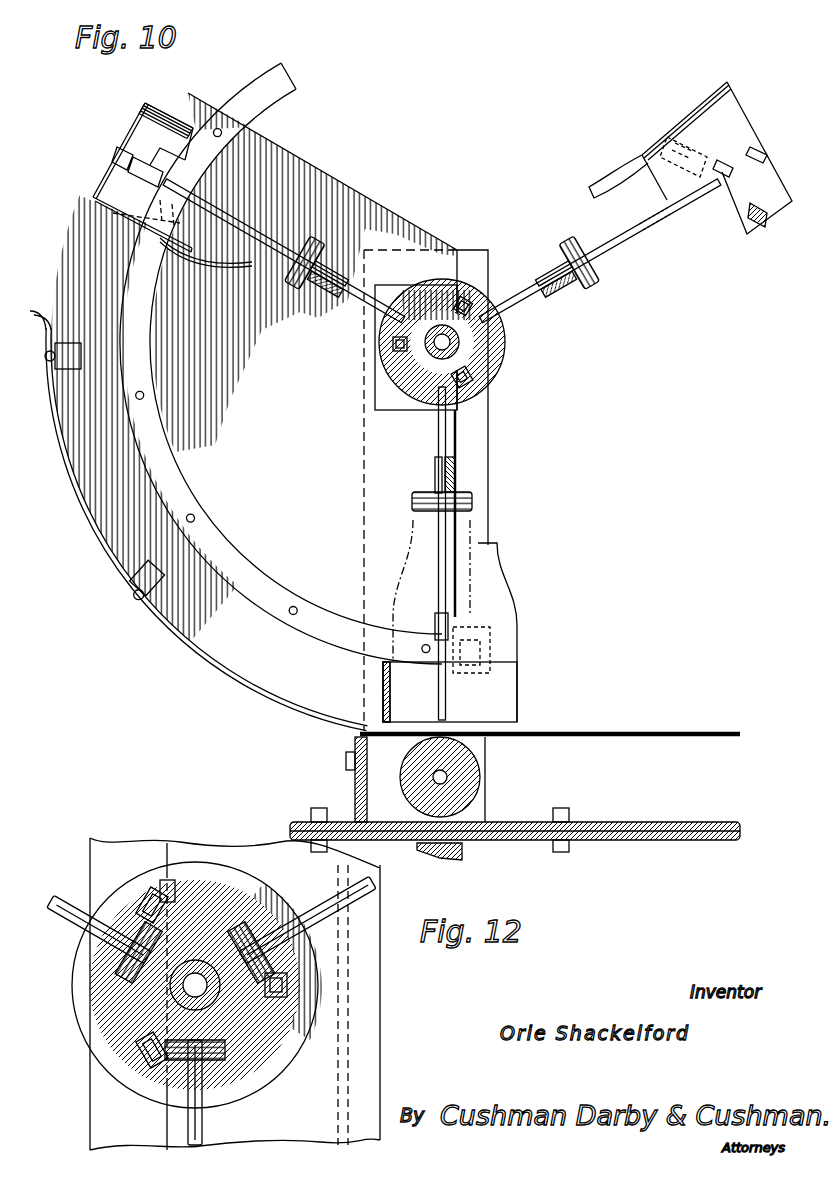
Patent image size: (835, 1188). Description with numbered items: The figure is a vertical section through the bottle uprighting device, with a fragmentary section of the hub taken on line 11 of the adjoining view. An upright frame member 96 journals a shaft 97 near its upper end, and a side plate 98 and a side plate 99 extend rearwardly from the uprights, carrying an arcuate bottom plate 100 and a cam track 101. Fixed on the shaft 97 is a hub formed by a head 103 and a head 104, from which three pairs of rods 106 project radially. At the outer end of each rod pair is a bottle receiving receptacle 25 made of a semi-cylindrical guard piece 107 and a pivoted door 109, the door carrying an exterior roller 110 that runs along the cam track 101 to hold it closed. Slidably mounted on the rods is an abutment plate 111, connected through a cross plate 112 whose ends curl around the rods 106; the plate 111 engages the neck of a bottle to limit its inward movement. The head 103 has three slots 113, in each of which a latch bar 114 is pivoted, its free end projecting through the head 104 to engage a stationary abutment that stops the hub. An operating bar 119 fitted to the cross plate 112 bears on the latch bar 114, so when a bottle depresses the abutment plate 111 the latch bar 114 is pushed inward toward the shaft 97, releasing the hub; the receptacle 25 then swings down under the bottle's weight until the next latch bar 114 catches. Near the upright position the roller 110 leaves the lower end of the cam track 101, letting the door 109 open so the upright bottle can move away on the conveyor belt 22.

In FIG. 10, the section line of Fig. 11 is at (440, 130).
In FIG. 10, the conveyor belt 22 is at (622, 732).
In FIG. 10, the bottle receiving receptacle 25 is at (132, 122).
In FIG. 10, the frame member 96 is at (488, 447).
In FIG. 10, the shaft 97 is at (478, 352).
In FIG. 12, the shaft 97 is at (140, 1000).
In FIG. 12, the side plate 98 is at (365, 1040).
In FIG. 10, the side plate 99 is at (318, 180).
In FIG. 10, the arcuate bottom plate 100 is at (170, 628).
In FIG. 10, the cam track 101 is at (233, 108).
In FIG. 12, the head 103 is at (125, 878).
In FIG. 10, the head 104 is at (486, 330).
In FIG. 10, the rod 106 is at (300, 260).
In FIG. 12, the rod 106 is at (60, 918).
In FIG. 10, the semi-cylindrical guard piece 107 is at (152, 105).
In FIG. 10, the pivoted door 109 is at (122, 158).
In FIG. 10, the roller 110 is at (113, 213).
In FIG. 10, the abutment plate 111 is at (320, 245).
In FIG. 10, the cross plate 112 is at (552, 268).
In FIG. 12, the slot 113 is at (150, 888).
In FIG. 10, the latch bar 114 is at (470, 300).
In FIG. 12, the latch bar 114 is at (88, 882).
In FIG. 10, the operating bar 119 is at (500, 292).